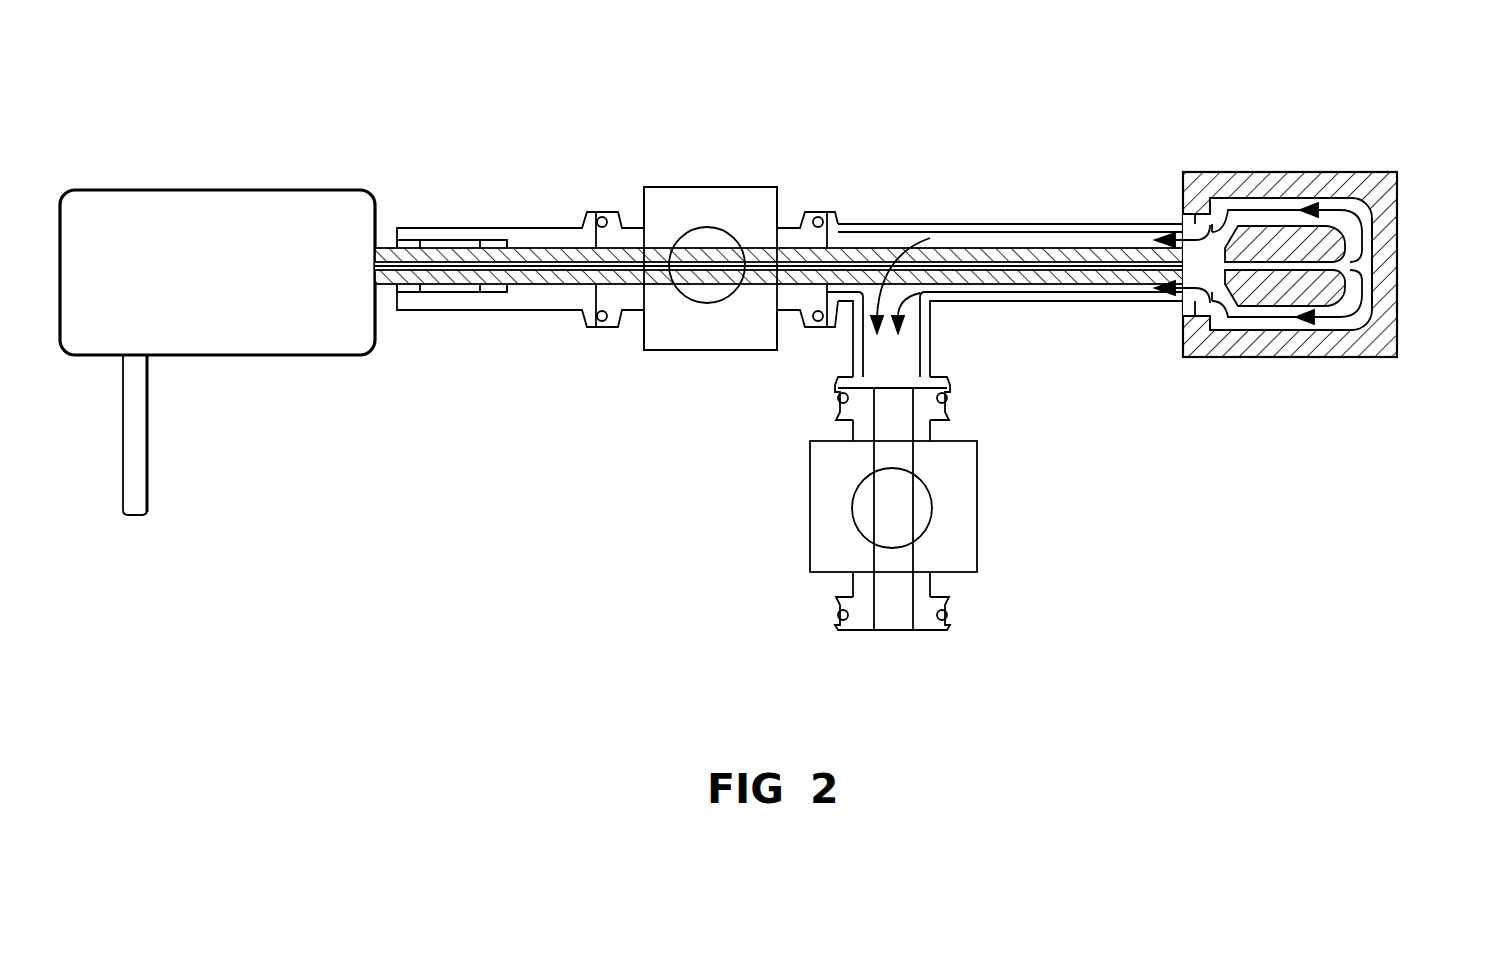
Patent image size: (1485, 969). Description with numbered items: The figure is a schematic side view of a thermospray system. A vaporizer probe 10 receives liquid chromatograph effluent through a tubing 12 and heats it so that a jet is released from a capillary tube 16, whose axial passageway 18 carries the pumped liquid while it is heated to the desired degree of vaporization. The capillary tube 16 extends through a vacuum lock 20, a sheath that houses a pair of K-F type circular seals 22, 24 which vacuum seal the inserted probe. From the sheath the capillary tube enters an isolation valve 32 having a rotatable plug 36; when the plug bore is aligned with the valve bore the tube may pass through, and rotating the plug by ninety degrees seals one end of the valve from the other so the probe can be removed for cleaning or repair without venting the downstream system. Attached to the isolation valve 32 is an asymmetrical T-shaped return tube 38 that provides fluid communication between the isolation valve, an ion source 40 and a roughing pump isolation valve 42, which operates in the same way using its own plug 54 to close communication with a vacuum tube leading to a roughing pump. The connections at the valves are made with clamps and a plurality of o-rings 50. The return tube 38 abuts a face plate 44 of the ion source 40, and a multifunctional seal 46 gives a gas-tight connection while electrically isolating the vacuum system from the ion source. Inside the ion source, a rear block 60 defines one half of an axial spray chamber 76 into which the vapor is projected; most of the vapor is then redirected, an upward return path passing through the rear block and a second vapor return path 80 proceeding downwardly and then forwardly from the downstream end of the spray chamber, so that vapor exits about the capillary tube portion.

The vaporizer probe 10 is at (270, 470).
The tubing 12 is at (148, 456).
The capillary tube 16 is at (555, 300).
The axial passageway 18 is at (532, 250).
The vacuum lock 20 is at (505, 230).
The circular seal 22 is at (430, 300).
The circular seal 24 is at (490, 300).
The isolation valve 32 is at (697, 210).
The plug 36 is at (705, 300).
The return tube 38 is at (1115, 303).
The ion source 40 is at (1295, 130).
The roughing pump isolation valve 42 is at (962, 527).
The face plate 44 is at (1207, 227).
The multifunctional seal 46 is at (1183, 222).
The o-rings 50 is at (600, 322).
The plug 54 is at (866, 505).
The rear block 60 is at (1390, 270).
The axial spray chamber 76 is at (1255, 262).
The second vapor return path 80 is at (1355, 322).